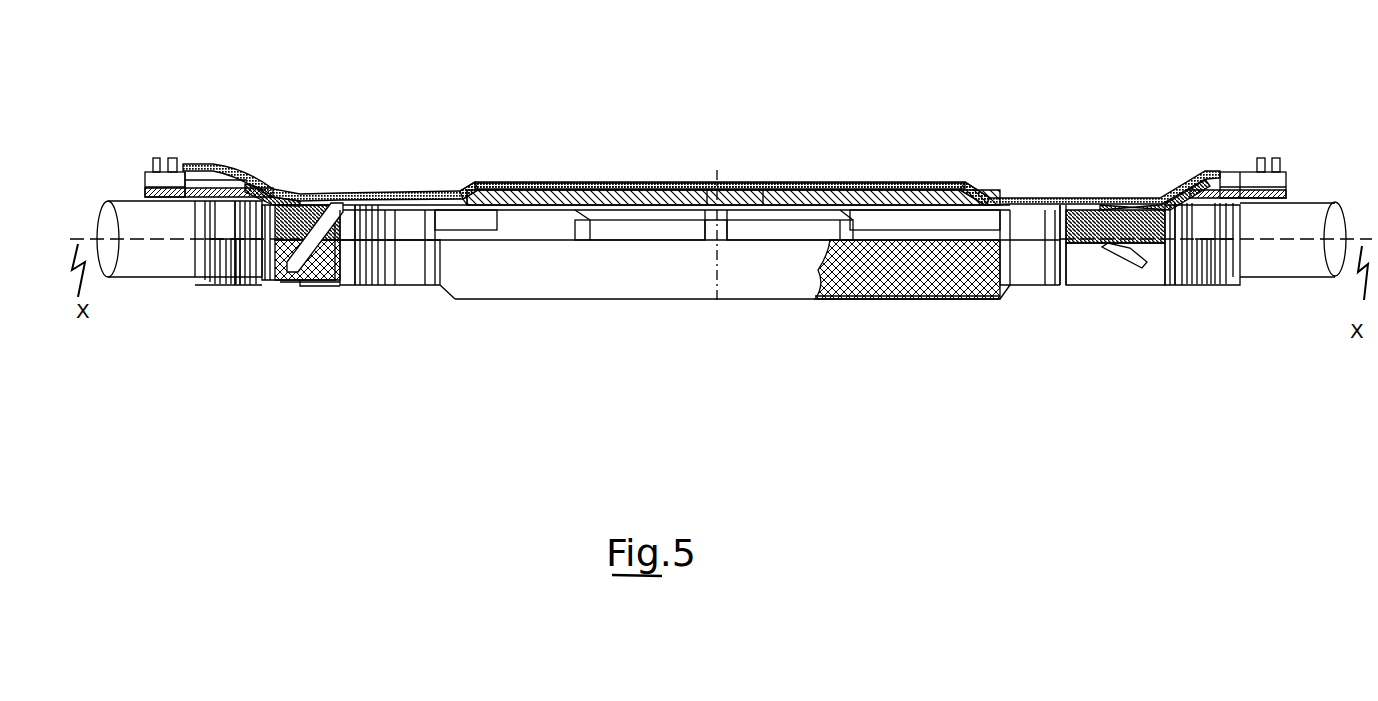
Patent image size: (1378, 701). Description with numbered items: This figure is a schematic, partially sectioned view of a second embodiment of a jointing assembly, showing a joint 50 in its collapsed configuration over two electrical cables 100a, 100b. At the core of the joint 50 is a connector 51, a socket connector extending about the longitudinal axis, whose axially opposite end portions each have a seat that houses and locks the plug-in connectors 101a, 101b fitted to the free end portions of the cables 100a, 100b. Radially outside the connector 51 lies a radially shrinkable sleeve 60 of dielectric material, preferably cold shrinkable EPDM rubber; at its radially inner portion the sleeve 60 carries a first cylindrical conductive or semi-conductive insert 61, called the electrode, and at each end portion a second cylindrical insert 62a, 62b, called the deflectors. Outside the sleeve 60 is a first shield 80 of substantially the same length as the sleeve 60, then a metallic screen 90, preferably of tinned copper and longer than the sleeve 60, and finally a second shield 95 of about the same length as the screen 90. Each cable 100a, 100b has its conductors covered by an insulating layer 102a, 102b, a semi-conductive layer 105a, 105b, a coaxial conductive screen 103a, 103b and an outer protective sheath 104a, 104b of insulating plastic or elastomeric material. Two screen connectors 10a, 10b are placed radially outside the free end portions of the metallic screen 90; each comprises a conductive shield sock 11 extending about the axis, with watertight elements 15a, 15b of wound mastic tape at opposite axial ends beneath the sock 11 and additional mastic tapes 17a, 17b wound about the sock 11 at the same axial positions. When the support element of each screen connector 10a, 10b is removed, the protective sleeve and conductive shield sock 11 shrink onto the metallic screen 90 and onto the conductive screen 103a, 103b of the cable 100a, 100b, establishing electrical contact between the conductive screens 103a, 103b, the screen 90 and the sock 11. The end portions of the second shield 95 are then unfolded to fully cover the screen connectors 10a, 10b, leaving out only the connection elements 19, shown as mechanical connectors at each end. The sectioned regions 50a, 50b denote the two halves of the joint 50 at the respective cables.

The connection element 19 is at (152, 160).
The radially shrinkable sleeve 60 is at (608, 182).
The first cylindrical insert (electrode) 61 is at (745, 210).
The first shield 80 is at (833, 189).
The second cylindrical insert (deflector) 62a is at (982, 190).
The second cylindrical insert (deflector) 62b is at (447, 195).
The conductive screen 103a is at (1100, 230).
The conductive screen 103b is at (283, 200).
The semi-conductive layer 105a is at (1032, 228).
The semi-conductive layer 105b is at (398, 193).
The protective sheath 104a is at (1267, 263).
The protective sheath 104b is at (150, 262).
The electrical cable 100a is at (1211, 318).
The electrical cable 100b is at (239, 318).
The screen connector 10a is at (1145, 313).
The screen connector 10b is at (297, 318).
The conductive shield sock 11 is at (314, 282).
The watertight element 15a is at (237, 200).
The mastic tape 17a is at (705, 243).
The watertight element 15b is at (367, 283).
The mastic tape 17b is at (707, 245).
The joint 50 is at (705, 344).
The shaft section 50a is at (1040, 327).
The shaft section 50b is at (409, 325).
The connector 51 is at (670, 217).
The plug-in connector 101a is at (768, 235).
The plug-in connector 101b is at (605, 233).
The insulating layer 102a is at (887, 230).
The insulating layer 102b is at (532, 225).
The metallic screen 90 is at (950, 273).
The second shield 95 is at (847, 290).